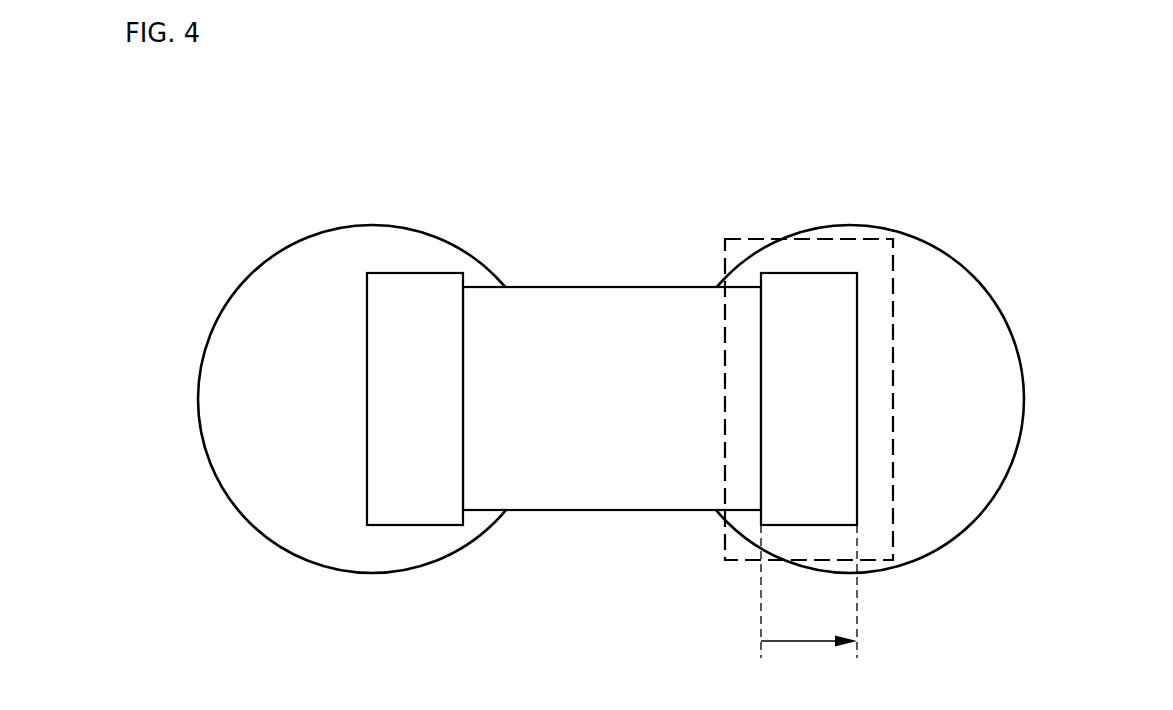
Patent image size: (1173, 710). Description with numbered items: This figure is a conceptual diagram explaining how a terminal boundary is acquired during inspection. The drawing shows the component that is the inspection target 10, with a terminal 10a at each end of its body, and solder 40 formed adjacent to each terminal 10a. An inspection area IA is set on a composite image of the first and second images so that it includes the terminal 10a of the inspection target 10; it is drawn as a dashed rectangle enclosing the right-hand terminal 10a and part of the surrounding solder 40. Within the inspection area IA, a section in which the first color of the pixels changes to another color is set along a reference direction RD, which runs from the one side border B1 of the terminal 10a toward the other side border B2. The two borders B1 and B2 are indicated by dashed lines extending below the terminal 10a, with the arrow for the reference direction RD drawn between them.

The inspection target 10 is at (567, 383).
The terminal 10a is at (413, 525).
The solder 40 is at (290, 503).
The inspection area IA is at (755, 238).
The reference direction RD is at (809, 624).
The one side border B1 is at (763, 610).
The other side border B2 is at (860, 610).